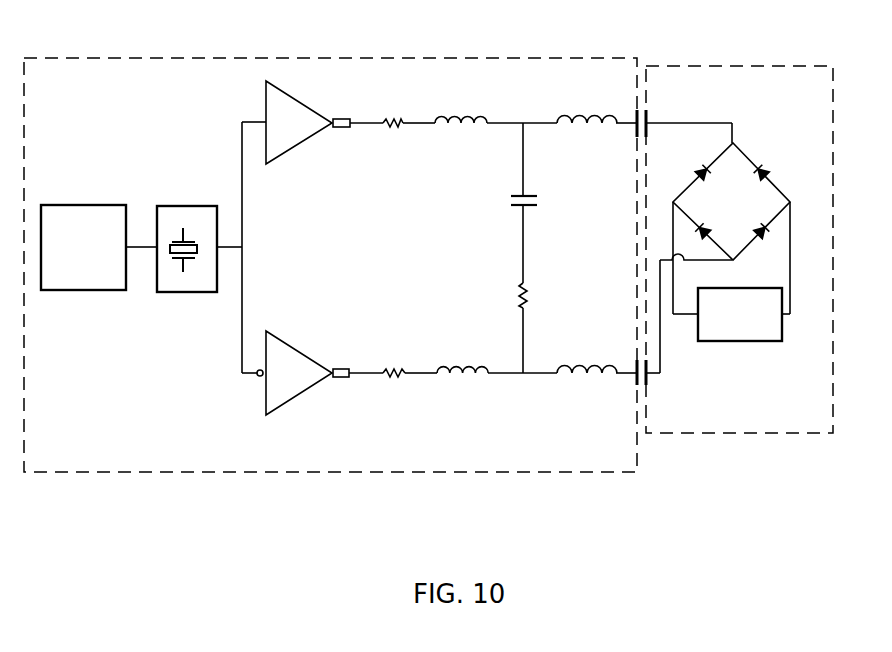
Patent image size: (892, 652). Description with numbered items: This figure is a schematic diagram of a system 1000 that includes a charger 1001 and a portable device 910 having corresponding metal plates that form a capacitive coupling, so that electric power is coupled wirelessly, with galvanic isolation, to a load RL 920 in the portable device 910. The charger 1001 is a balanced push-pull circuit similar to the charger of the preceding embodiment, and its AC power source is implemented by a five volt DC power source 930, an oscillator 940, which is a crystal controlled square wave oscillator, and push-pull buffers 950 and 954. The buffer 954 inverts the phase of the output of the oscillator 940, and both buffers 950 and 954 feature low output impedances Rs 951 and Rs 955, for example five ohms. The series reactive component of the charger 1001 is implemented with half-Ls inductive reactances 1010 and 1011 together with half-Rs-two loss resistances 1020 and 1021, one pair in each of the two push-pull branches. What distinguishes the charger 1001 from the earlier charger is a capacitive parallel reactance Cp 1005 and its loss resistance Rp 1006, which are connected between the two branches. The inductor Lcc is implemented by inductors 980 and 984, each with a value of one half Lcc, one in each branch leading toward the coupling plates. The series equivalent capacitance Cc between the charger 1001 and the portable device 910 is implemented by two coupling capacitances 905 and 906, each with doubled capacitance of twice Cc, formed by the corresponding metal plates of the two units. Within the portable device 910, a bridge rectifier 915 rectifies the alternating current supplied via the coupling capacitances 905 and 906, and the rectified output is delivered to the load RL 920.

The system 1000 is at (656, 37).
The charger 1001 is at (235, 480).
The portable device 910 is at (747, 440).
The 5 volt DC power source 930 is at (107, 198).
The oscillator 940 is at (197, 198).
The push-pull buffer 950 is at (293, 152).
The output impedance Rs 951 is at (343, 132).
The loss resistance ½Rs2 1020 is at (395, 133).
The inductive reactance ½Ls 1010 is at (458, 133).
The inductor 980 is at (597, 127).
The coupling capacitance 905 is at (628, 132).
The capacitive parallel reactance Cp 1005 is at (510, 210).
The loss resistance Rp 1006 is at (515, 297).
The push-pull buffer 954 is at (305, 345).
The output impedance Rs 955 is at (347, 358).
The loss resistance ½Rs2 1021 is at (397, 382).
The inductive reactance ½Ls 1011 is at (467, 382).
The inductor 984 is at (600, 358).
The coupling capacitance 906 is at (628, 362).
The bridge rectifier 915 is at (777, 157).
The load RL 920 is at (762, 345).